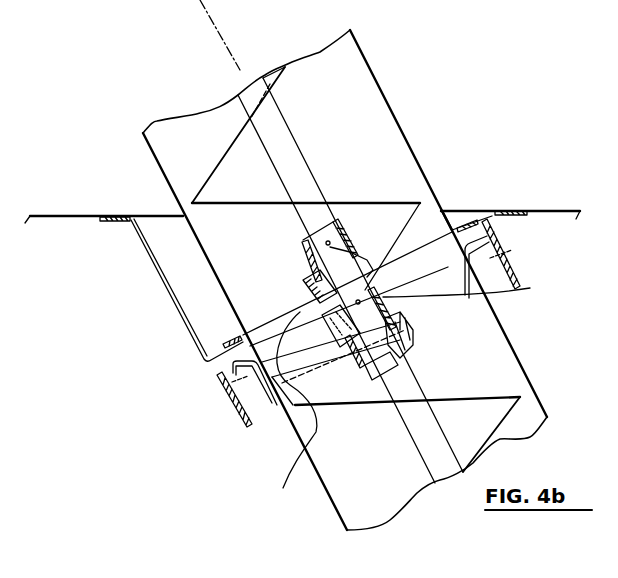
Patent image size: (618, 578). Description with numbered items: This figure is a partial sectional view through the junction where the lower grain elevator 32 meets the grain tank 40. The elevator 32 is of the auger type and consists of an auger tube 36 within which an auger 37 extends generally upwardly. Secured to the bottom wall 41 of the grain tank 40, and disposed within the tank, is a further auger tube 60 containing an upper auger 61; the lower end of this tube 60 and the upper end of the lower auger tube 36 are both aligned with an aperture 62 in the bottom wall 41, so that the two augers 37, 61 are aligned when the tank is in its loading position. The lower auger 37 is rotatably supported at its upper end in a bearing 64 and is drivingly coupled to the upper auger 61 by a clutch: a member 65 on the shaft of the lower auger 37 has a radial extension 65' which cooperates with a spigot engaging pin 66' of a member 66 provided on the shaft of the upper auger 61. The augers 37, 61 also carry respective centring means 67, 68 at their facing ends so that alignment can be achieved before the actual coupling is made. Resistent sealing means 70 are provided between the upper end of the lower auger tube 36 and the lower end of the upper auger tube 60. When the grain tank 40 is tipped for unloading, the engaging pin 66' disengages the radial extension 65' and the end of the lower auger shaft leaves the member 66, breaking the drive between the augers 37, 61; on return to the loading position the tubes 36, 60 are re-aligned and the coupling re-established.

The lower grain elevator 32 is at (509, 339).
The auger tube 36 is at (533, 390).
The auger 37 is at (518, 442).
The grain tank 40 is at (530, 210).
The bottom wall 41 is at (68, 214).
The further auger tube 60 is at (399, 127).
The auger 61 is at (343, 200).
The aperture 62 is at (200, 208).
The bearing 64 is at (333, 415).
The member 65 is at (524, 258).
The radial extension 65' is at (239, 425).
The member 66 is at (381, 255).
The spigot engaging pin 66' is at (314, 295).
The centring means 67 is at (372, 262).
The centring means 68 is at (437, 214).
The resistent sealing means 70 is at (228, 372).